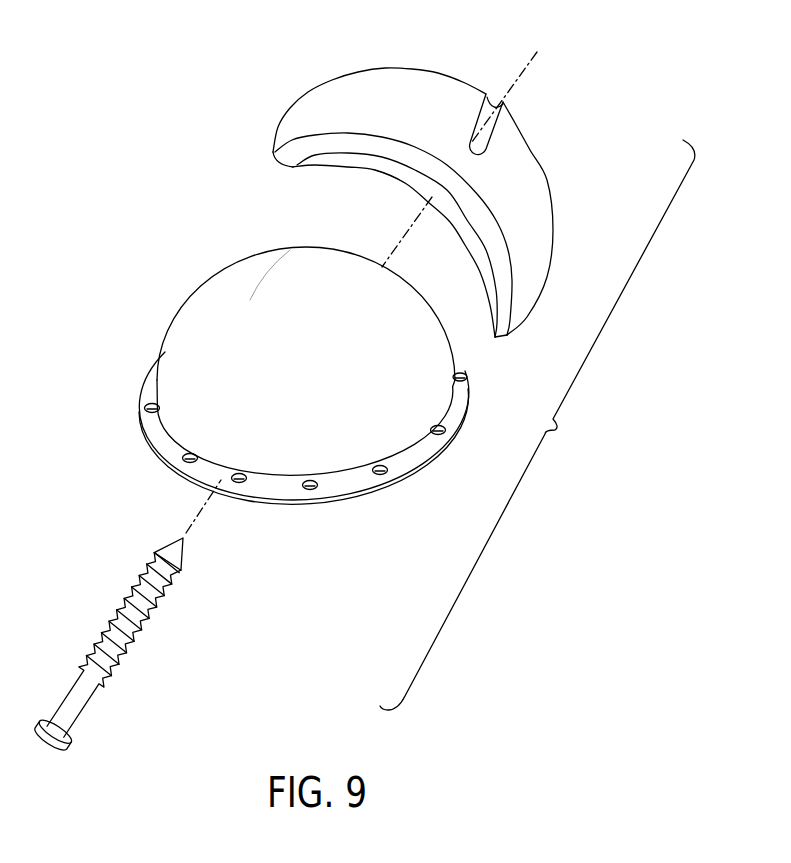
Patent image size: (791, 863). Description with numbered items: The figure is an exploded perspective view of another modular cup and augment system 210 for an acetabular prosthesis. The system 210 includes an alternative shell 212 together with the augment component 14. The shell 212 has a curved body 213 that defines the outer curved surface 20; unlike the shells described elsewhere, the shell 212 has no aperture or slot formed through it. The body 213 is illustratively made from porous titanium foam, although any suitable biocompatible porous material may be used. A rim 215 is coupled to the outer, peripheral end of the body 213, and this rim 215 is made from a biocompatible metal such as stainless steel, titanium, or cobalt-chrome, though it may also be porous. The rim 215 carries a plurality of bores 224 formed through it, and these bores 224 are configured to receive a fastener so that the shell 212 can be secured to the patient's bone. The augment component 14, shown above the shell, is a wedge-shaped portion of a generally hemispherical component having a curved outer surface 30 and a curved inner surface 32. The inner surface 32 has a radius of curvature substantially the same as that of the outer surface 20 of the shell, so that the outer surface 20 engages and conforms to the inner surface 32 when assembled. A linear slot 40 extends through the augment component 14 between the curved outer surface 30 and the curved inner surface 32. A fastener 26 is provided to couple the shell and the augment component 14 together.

The augment component 14 is at (461, 179).
The outer curved surface 20 is at (328, 270).
The fastener 26 is at (165, 677).
The curved outer surface 30 is at (367, 100).
The curved inner surface 32 is at (372, 166).
The slot 40 is at (486, 96).
The modular cup and augment system 210 is at (537, 425).
The shell 212 is at (276, 383).
The body 213 is at (278, 298).
The rim 215 is at (168, 443).
The bores 224 is at (147, 412).